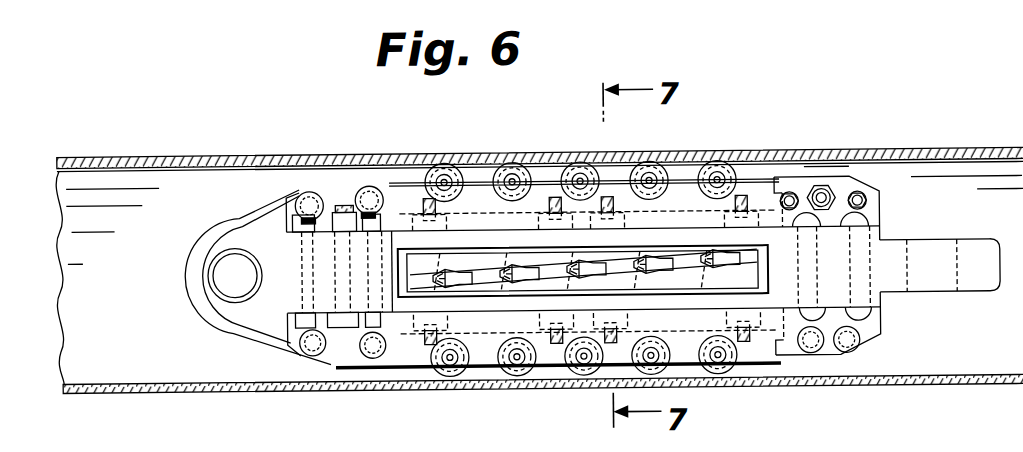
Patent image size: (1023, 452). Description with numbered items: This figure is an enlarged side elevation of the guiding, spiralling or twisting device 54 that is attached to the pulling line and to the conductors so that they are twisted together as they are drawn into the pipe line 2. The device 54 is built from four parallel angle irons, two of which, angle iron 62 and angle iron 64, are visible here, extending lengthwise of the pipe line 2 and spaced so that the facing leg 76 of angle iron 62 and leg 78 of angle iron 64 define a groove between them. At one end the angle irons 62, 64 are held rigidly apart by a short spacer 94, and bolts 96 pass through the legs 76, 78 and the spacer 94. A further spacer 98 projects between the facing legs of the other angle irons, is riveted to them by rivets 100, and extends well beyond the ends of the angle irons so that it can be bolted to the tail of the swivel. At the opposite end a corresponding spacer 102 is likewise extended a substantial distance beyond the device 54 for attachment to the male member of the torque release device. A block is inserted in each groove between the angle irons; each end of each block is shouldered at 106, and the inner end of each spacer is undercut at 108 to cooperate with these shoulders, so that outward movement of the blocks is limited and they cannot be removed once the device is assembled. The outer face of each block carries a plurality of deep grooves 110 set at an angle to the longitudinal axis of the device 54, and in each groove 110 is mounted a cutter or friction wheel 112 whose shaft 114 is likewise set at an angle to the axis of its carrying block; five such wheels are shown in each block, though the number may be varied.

The pipe line 2 is at (906, 160).
The guiding, spiralling or twisting device 54 is at (877, 344).
The angle iron 62 is at (677, 240).
The angle iron 64 is at (710, 309).
The leg of angle iron 76 is at (288, 240).
The leg of angle iron 78 is at (292, 313).
The short spacer 94 is at (290, 273).
The bolt 96 is at (346, 213).
The spacer 98 is at (213, 238).
The rivet 100 is at (365, 195).
The spacer 102 is at (893, 299).
The shoulder 106 is at (404, 373).
The undercut 108 is at (378, 377).
The groove 110 is at (465, 275).
The cutter or friction wheel 112 is at (470, 288).
The shaft 114 is at (445, 265).